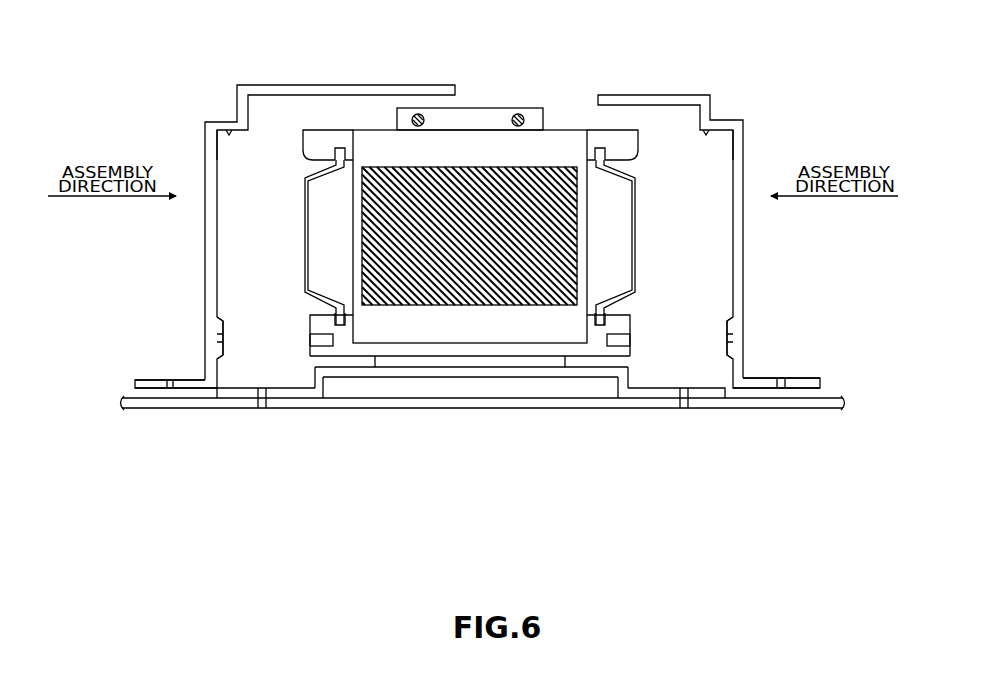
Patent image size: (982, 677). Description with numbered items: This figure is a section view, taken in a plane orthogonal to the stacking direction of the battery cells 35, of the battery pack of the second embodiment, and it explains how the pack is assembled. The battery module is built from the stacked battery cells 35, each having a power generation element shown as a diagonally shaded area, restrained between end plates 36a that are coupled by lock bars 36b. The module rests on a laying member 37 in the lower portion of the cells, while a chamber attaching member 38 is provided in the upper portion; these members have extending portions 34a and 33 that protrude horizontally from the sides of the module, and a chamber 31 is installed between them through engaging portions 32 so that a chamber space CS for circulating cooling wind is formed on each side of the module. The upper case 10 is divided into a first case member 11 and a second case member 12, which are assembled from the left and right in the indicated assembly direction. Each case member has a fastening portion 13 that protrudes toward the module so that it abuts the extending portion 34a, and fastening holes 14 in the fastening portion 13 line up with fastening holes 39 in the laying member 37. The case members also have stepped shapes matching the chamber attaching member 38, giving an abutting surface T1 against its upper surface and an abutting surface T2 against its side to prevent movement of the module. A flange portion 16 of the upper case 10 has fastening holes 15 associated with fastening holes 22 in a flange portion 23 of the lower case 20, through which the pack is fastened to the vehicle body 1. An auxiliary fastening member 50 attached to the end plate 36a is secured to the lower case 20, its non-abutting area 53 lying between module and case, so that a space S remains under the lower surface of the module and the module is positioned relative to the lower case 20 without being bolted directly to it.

The vehicle body 1 is at (195, 404).
The upper case 10 is at (459, 236).
The first case member 11 is at (203, 150).
The second case member 12 is at (746, 148).
The fastening portion 13 is at (218, 327).
The fastening hole 14 is at (218, 338).
The fastening hole 15 is at (170, 380).
The flange portion 16 is at (150, 380).
The lower case 20 is at (372, 382).
The fastening hole 22 is at (262, 392).
The flange portion 23 is at (233, 390).
The chamber 31 is at (305, 222).
The engaging portion 32 is at (340, 150).
The extending portion 33 is at (453, 92).
The extending portion 34a is at (323, 323).
The battery cell 35 is at (542, 345).
The end plate 36a is at (418, 112).
The lock bar 36b is at (517, 112).
The laying member 37 is at (410, 350).
The chamber attaching member 38 is at (315, 137).
The fastening hole 39 is at (318, 340).
The auxiliary fastening member 50 is at (569, 362).
The non-abutting area 53 is at (493, 369).
The chamber space CS is at (325, 247).
The space S is at (604, 358).
The abutting surface T1 is at (228, 130).
The abutting surface T2 is at (216, 137).